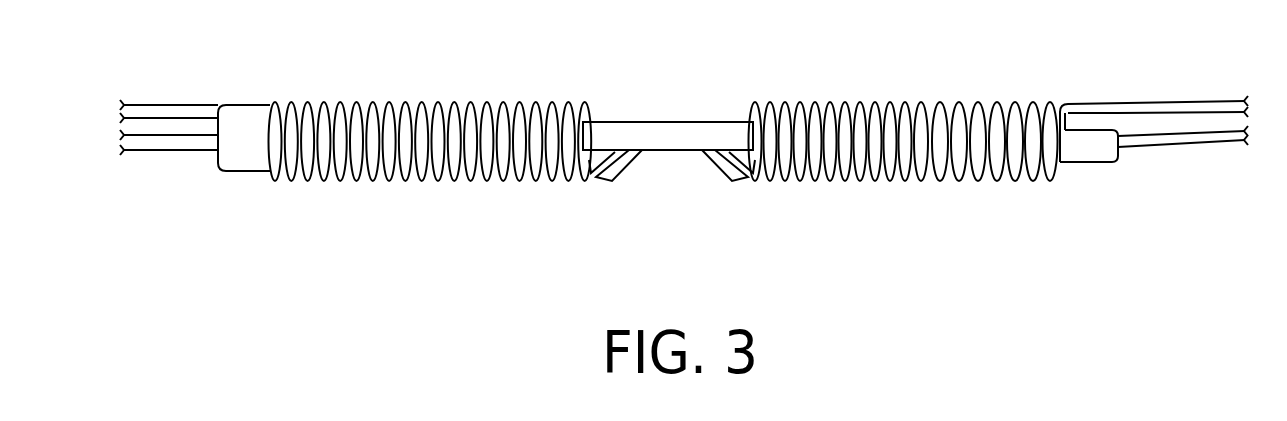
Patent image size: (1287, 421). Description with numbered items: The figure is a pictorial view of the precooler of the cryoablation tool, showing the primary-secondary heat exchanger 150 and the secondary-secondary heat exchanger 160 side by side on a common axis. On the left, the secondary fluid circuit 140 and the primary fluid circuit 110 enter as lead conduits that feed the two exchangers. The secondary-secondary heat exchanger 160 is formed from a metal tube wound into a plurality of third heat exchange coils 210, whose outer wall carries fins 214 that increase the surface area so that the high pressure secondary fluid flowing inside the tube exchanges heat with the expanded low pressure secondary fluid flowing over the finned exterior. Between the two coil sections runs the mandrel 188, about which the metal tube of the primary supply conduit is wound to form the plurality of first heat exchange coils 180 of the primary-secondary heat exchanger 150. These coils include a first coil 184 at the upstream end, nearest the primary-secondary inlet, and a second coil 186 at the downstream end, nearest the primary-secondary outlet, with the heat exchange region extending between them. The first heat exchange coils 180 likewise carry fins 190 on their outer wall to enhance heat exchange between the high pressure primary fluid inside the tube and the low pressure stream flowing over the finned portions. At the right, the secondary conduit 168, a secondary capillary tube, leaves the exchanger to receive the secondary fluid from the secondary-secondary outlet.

The primary fluid circuit 110 is at (147, 150).
The secondary fluid circuit 140 is at (178, 106).
The primary-secondary heat exchanger 150 is at (880, 129).
The secondary-secondary heat exchanger 160 is at (456, 116).
The secondary conduit 168 is at (1147, 140).
The first heat exchange coils 180 is at (812, 173).
The first coil 184 is at (750, 180).
The second coil 186 is at (1053, 181).
The mandrel 188 is at (707, 140).
The fins 190 is at (918, 173).
The third heat exchange coils 210 is at (550, 173).
The fins 214 is at (277, 173).